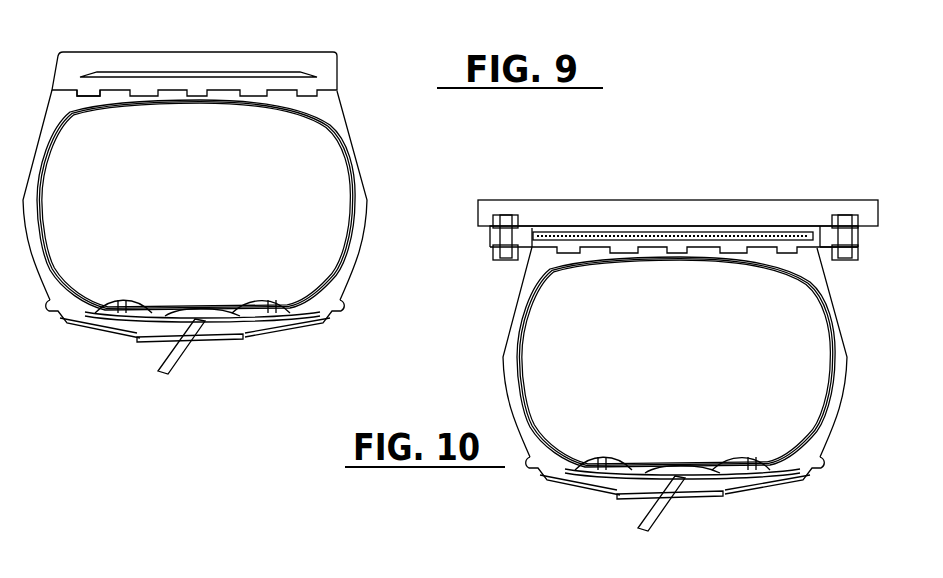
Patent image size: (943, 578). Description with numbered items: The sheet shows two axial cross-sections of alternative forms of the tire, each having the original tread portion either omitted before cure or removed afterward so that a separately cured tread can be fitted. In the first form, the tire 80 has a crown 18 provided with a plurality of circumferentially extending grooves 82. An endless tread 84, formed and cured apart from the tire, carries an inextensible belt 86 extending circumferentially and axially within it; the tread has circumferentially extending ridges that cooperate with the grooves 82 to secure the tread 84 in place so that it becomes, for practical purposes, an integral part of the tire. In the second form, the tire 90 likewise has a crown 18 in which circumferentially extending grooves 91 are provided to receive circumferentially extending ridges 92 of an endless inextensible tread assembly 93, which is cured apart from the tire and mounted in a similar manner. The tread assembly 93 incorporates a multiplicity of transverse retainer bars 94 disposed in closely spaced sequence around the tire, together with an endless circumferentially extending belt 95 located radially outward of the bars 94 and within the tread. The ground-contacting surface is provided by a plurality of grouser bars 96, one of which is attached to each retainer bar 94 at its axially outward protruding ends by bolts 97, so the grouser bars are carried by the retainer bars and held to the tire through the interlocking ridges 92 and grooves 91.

In FIG. 9, the crown 18 is at (197, 101).
In FIG. 9, the tire 80 is at (365, 150).
In FIG. 9, the circumferentially extending grooves 82 is at (80, 93).
In FIG. 9, the endless tread 84 is at (237, 52).
In FIG. 9, the inextensible belt 86 is at (316, 78).
In FIG. 10, the tire 90 is at (512, 316).
In FIG. 10, the circumferentially extending grooves 91 is at (628, 253).
In FIG. 10, the circumferentially extending ridges 92 is at (787, 257).
In FIG. 10, the endless inextensible tread assembly 93 is at (668, 209).
In FIG. 10, the transverse retainer bars 94 is at (860, 236).
In FIG. 10, the endless circumferentially extending belt 95 is at (560, 233).
In FIG. 10, the grouser bars 96 is at (788, 206).
In FIG. 10, the bolts 97 is at (497, 231).